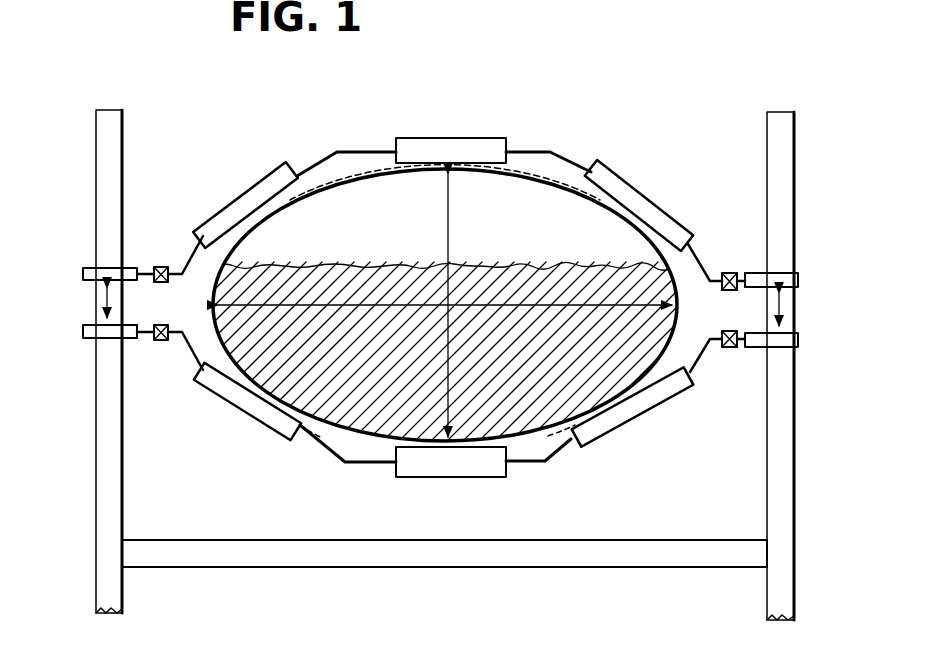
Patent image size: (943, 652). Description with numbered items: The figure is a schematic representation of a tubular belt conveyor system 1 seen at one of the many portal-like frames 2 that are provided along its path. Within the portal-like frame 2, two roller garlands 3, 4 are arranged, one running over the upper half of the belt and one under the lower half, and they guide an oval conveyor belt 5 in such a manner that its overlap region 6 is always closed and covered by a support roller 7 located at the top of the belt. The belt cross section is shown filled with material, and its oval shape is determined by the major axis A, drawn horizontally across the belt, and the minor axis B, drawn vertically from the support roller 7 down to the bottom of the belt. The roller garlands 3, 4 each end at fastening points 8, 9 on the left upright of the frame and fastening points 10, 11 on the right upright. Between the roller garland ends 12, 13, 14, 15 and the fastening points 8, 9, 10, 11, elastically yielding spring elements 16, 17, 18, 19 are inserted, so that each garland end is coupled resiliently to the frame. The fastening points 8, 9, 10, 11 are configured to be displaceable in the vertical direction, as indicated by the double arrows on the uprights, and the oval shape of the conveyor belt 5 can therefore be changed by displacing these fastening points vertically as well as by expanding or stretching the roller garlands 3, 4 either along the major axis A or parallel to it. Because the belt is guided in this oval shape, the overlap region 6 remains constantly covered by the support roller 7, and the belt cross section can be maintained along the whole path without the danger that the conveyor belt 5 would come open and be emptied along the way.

The tubular belt conveyor system 1 is at (642, 138).
The portal-like frame 2 is at (108, 179).
The roller garland 3 is at (342, 150).
The roller garland 4 is at (345, 465).
The conveyor belt 5 is at (554, 440).
The overlap region 6 is at (487, 173).
The support roller 7 is at (457, 150).
The fastening point 8 is at (88, 271).
The fastening point 9 is at (88, 334).
The fastening point 10 is at (790, 272).
The fastening point 11 is at (796, 340).
The roller garland end 12 is at (177, 265).
The roller garland end 13 is at (177, 340).
The roller garland end 14 is at (715, 272).
The roller garland end 15 is at (711, 346).
The spring element 16 is at (158, 267).
The spring element 17 is at (158, 341).
The spring element 18 is at (730, 273).
The spring element 19 is at (728, 347).
The major axis A is at (495, 308).
The minor axis B is at (447, 230).